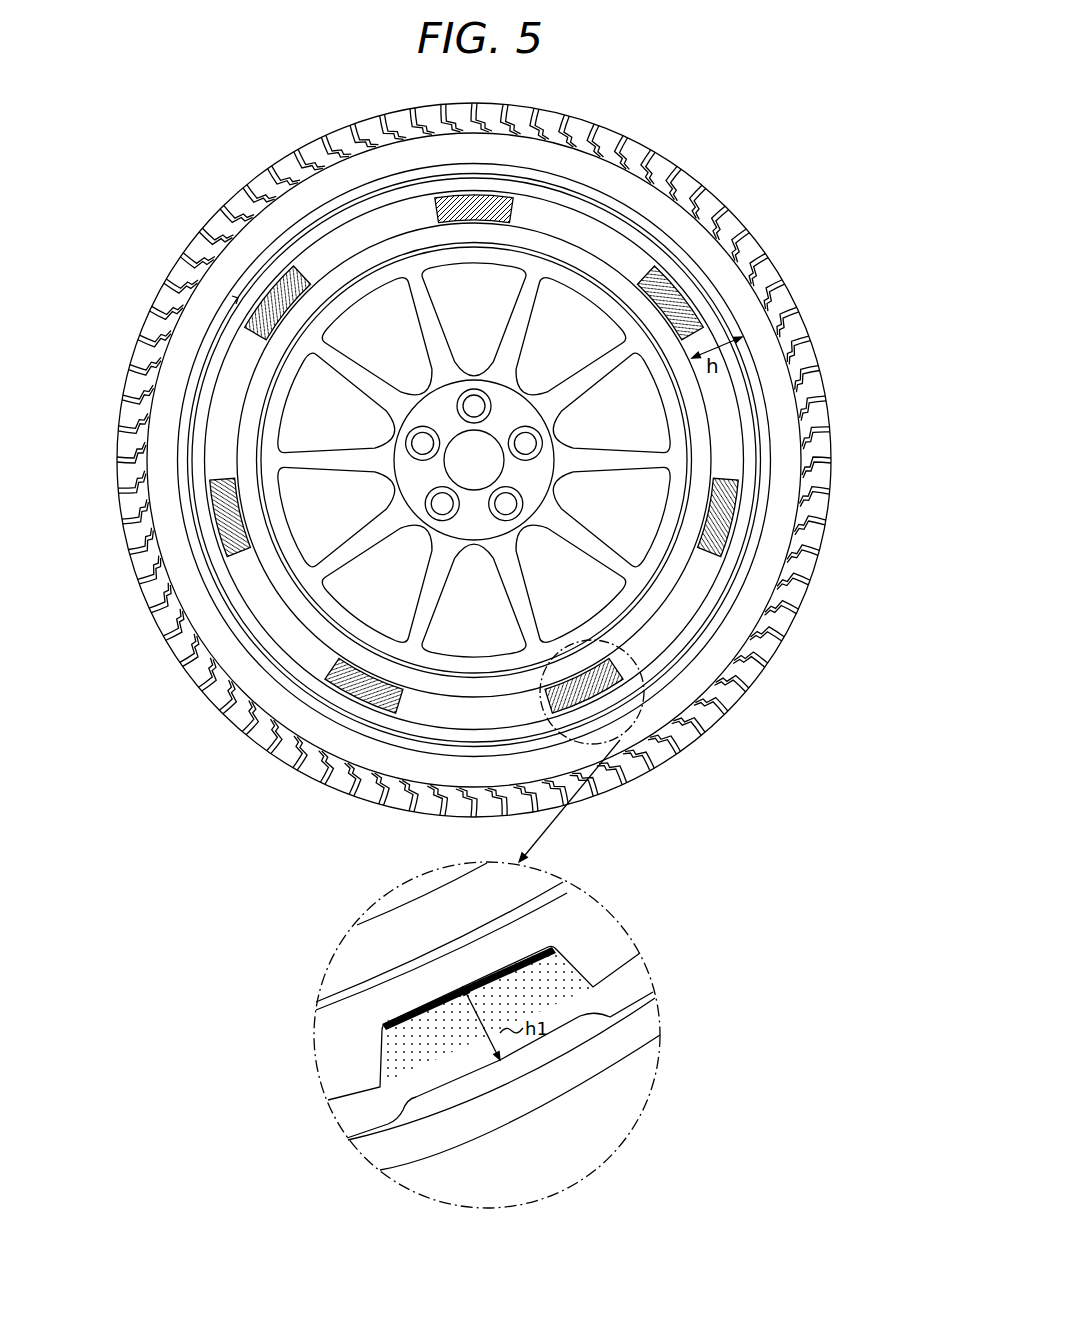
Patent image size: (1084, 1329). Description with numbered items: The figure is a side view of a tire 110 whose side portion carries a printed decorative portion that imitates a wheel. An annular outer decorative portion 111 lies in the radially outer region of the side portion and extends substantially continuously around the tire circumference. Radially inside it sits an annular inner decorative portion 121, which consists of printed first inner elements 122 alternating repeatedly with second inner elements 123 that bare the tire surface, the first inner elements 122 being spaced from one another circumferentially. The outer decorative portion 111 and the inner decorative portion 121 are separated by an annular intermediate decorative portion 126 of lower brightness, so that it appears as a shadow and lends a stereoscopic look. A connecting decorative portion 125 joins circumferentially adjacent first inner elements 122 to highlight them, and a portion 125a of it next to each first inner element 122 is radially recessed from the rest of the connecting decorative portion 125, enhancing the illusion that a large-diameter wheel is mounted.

The tire 110 is at (703, 158).
The outer decorative portion 111 is at (697, 280).
The inner decorative portion 121 is at (504, 584).
The first inner element 122 is at (472, 198).
The second inner element 123 is at (705, 575).
The connecting decorative portion 125 is at (360, 213).
The portion of the connecting decorative portion 125a is at (240, 300).
The intermediate decorative portion 126 is at (668, 245).